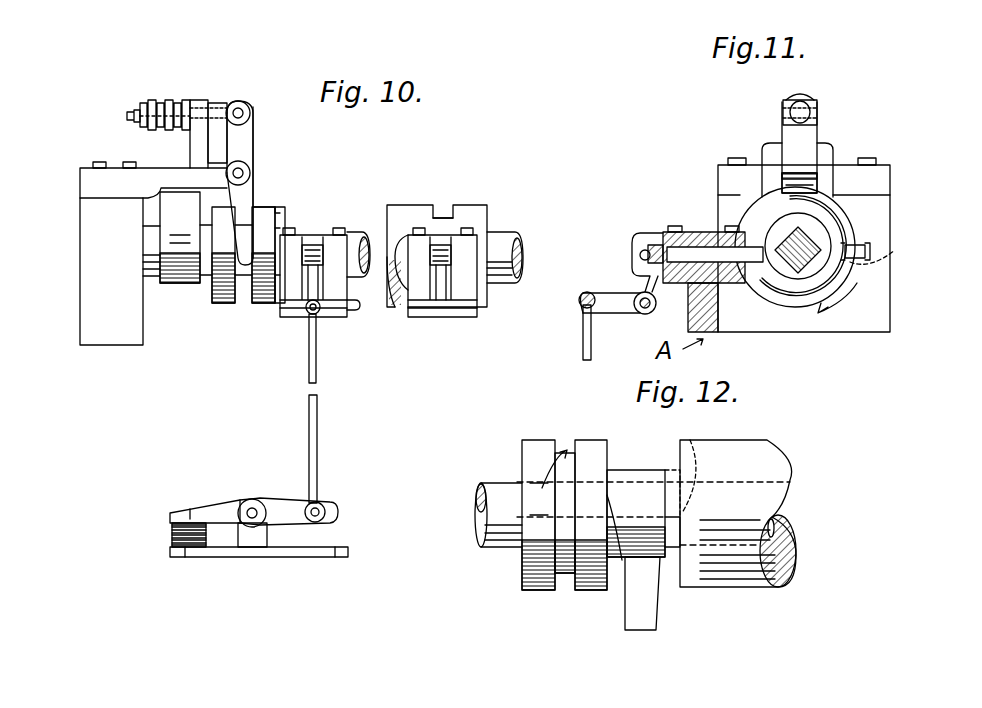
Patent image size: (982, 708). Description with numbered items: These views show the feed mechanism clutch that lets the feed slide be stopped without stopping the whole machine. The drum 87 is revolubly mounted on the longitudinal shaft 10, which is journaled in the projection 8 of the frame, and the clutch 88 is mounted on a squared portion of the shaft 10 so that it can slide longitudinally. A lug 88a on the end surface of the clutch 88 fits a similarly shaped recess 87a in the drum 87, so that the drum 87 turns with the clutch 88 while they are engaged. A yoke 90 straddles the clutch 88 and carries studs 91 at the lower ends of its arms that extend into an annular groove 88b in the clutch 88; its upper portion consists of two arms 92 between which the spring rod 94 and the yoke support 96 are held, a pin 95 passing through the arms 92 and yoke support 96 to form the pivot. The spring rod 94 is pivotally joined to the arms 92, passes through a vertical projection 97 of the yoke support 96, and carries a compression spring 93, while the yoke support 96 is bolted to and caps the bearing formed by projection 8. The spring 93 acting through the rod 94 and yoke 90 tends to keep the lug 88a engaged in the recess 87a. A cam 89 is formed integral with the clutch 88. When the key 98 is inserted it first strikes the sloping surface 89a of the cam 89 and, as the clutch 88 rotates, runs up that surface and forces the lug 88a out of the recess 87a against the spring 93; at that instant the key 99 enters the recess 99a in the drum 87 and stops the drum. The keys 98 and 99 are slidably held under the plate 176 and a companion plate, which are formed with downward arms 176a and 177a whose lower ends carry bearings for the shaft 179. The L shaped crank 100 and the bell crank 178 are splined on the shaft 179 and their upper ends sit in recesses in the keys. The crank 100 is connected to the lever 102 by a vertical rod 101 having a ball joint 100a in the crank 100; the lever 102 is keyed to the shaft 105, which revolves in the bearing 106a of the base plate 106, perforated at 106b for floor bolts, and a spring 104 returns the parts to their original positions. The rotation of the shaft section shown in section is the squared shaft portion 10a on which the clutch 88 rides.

In FIG. 10, the projection 8 is at (100, 240).
In FIG. 10, the longitudinal shaft 10 is at (205, 277).
In FIG. 12, the longitudinal shaft 10 is at (478, 520).
In FIG. 11, the shaft 10a is at (815, 272).
In FIG. 12, the shaft 10a is at (520, 483).
In FIG. 10, the drum 87 is at (477, 210).
In FIG. 12, the drum 87 is at (765, 450).
In FIG. 12, the recess 87a is at (690, 445).
In FIG. 10, the clutch 88 is at (220, 298).
In FIG. 12, the clutch 88 is at (538, 592).
In FIG. 11, the lug 88a is at (835, 248).
In FIG. 12, the lug 88a is at (672, 470).
In FIG. 10, the annular groove 88b is at (250, 300).
In FIG. 12, the annular groove 88b is at (570, 592).
In FIG. 12, the cam 89 is at (630, 575).
In FIG. 12, the sloping surface 89a is at (615, 520).
In FIG. 10, the yoke 90 is at (248, 188).
In FIG. 11, the yoke 90 is at (830, 190).
In FIG. 11, the studs 91 is at (885, 250).
In FIG. 10, the arms 92 is at (248, 128).
In FIG. 11, the arms 92 is at (812, 155).
In FIG. 10, the compression spring 93 is at (180, 100).
In FIG. 11, the compression spring 93 is at (805, 98).
In FIG. 10, the spring rod 94 is at (240, 101).
In FIG. 11, the spring rod 94 is at (805, 110).
In FIG. 10, the pin 95 is at (250, 173).
In FIG. 10, the yoke support 96 is at (148, 172).
In FIG. 11, the yoke support 96 is at (718, 177).
In FIG. 10, the vertical projection 97 is at (198, 140).
In FIG. 11, the key 98 is at (760, 280).
In FIG. 12, the key 98 is at (632, 615).
In FIG. 10, the key 99 is at (447, 252).
In FIG. 10, the recess 99a is at (443, 210).
In FIG. 10, the L shaped crank 100 is at (312, 272).
In FIG. 11, the L shaped crank 100 is at (640, 305).
In FIG. 11, the ball joint 100a is at (580, 305).
In FIG. 10, the vertical rod 101 is at (318, 360).
In FIG. 11, the vertical rod 101 is at (585, 358).
In FIG. 10, the lever 102 is at (205, 503).
In FIG. 10, the spring 104 is at (170, 535).
In FIG. 10, the shaft 105 is at (248, 505).
In FIG. 10, the plate 106 is at (240, 557).
In FIG. 10, the bearing 106a is at (262, 540).
In FIG. 10, the perforation 106b is at (340, 547).
In FIG. 10, the plate 176 is at (312, 240).
In FIG. 11, the plate 176 is at (698, 235).
In FIG. 10, the arm 176a is at (292, 305).
In FIG. 11, the arm 176a is at (645, 238).
In FIG. 10, the arm 177a is at (455, 300).
In FIG. 10, the bell crank 178 is at (445, 278).
In FIG. 10, the shaft 179 is at (355, 305).
In FIG. 11, the shaft 179 is at (587, 300).